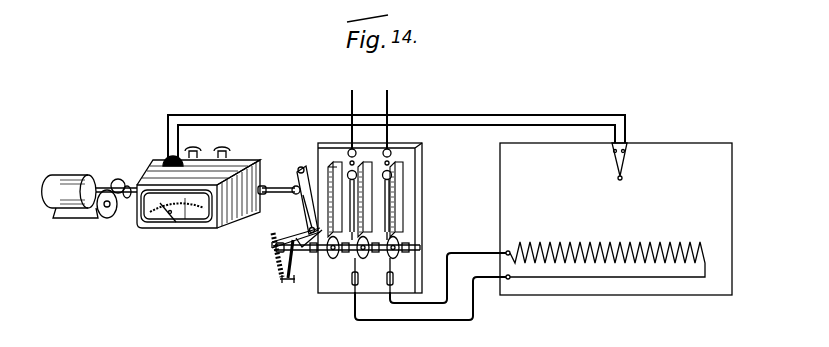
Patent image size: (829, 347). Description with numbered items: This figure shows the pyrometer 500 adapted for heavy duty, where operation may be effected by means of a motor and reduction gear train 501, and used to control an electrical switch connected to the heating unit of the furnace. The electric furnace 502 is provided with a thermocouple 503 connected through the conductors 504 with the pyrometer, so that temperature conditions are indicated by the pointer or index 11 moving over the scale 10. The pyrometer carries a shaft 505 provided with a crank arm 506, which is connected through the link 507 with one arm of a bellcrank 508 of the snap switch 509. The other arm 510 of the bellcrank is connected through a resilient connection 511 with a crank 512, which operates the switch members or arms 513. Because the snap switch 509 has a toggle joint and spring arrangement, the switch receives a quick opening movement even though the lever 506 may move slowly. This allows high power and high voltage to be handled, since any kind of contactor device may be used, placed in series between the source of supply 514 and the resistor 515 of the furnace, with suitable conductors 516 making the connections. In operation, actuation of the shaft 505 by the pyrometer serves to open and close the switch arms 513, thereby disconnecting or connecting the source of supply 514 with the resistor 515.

The scale 10 is at (198, 217).
The pointer or index 11 is at (175, 206).
The pyrometer 500 is at (227, 227).
The motor and reduction gear train 501 is at (95, 183).
The electric furnace 502 is at (677, 157).
The thermocouple 503 is at (615, 169).
The conductors 504 is at (520, 103).
The shaft 505 is at (267, 185).
The crank arm 506 is at (297, 165).
The link 507 is at (303, 207).
The bellcrank 508 is at (275, 255).
The snap switch 509 is at (283, 275).
The other arm of the bellcrank 510 is at (270, 245).
The resilient connection 511 is at (277, 270).
The crank 512 is at (302, 277).
The switch members or arms 513 is at (357, 258).
The source of supply 514 is at (387, 90).
The resistor 515 is at (613, 245).
The conductors 516 is at (447, 306).